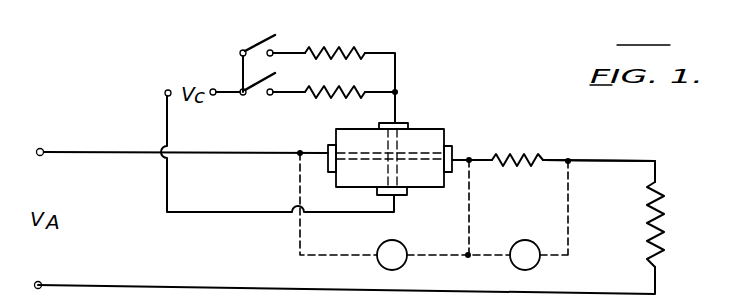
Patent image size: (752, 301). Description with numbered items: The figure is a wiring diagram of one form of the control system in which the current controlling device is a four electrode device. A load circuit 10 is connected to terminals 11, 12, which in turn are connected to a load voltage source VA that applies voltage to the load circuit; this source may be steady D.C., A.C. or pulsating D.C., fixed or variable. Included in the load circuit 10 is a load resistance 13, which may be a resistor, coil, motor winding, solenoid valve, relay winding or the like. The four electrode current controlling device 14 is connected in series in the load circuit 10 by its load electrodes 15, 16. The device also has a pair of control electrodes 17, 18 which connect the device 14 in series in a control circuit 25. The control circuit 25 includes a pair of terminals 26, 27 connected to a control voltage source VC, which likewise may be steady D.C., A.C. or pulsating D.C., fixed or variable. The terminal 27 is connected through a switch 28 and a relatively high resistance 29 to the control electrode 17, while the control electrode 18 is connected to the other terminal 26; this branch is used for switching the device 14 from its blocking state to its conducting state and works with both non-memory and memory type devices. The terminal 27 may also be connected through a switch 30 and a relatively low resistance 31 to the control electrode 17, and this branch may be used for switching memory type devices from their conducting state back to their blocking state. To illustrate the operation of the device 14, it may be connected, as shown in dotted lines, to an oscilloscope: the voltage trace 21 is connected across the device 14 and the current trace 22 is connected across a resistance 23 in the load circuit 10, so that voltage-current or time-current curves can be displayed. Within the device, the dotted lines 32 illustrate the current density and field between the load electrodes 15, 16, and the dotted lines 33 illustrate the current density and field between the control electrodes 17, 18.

The load circuit 10 is at (622, 160).
The terminal 11 is at (40, 148).
The terminal 12 is at (38, 281).
The load resistance 13 is at (663, 210).
The current controlling device 14 is at (430, 138).
The load electrode 15 is at (330, 152).
The load electrode 16 is at (453, 150).
The control electrode 17 is at (405, 125).
The control electrode 18 is at (404, 197).
The voltage trace 21 is at (405, 245).
The current trace 22 is at (543, 234).
The resistance 23 is at (537, 152).
The control circuit 25 is at (398, 105).
The terminal 26 is at (165, 92).
The terminal 27 is at (213, 89).
The switch 28 is at (261, 88).
The relatively high resistance 29 is at (333, 83).
The switch 30 is at (263, 44).
The relatively low resistance 31 is at (330, 44).
The dotted lines 32 is at (370, 150).
The dotted lines 33 is at (385, 140).